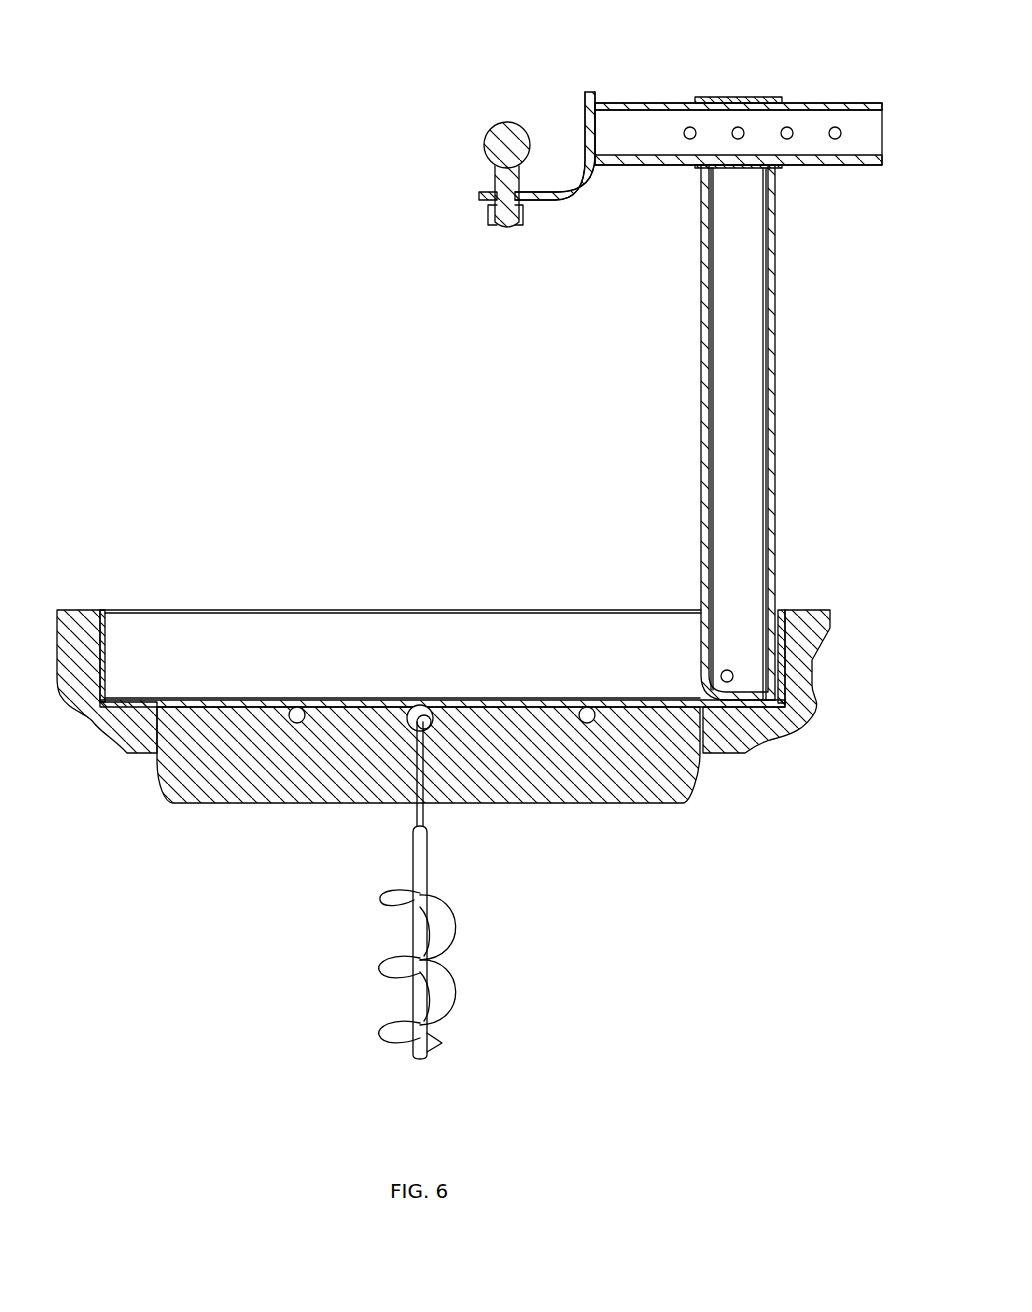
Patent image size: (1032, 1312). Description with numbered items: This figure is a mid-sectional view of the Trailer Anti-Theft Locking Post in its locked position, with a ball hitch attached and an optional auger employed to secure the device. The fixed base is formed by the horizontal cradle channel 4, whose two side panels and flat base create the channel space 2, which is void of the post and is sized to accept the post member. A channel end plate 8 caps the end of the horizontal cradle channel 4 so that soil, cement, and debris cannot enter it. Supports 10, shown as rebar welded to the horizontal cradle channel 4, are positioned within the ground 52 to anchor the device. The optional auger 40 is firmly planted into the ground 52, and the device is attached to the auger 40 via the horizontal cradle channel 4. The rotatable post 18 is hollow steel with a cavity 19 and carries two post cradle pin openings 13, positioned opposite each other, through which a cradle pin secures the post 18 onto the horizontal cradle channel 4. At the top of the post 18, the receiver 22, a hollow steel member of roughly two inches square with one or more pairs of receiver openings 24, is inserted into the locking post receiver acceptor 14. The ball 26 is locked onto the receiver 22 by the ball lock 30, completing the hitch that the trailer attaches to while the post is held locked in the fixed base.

The channel space 2 is at (347, 636).
The horizontal cradle channel 4 is at (102, 618).
The channel end plate 8 is at (784, 612).
The supports 10 is at (295, 726).
The post cradle pin openings 13 is at (734, 676).
The locking post receiver acceptor 14 is at (770, 101).
The post 18 is at (706, 527).
The cavity 19 is at (743, 445).
The receiver 22 is at (633, 104).
The receiver openings 24 is at (738, 127).
The ball 26 is at (507, 142).
The ball lock 30 is at (486, 213).
The auger 40 is at (441, 920).
The ground 52 is at (93, 724).